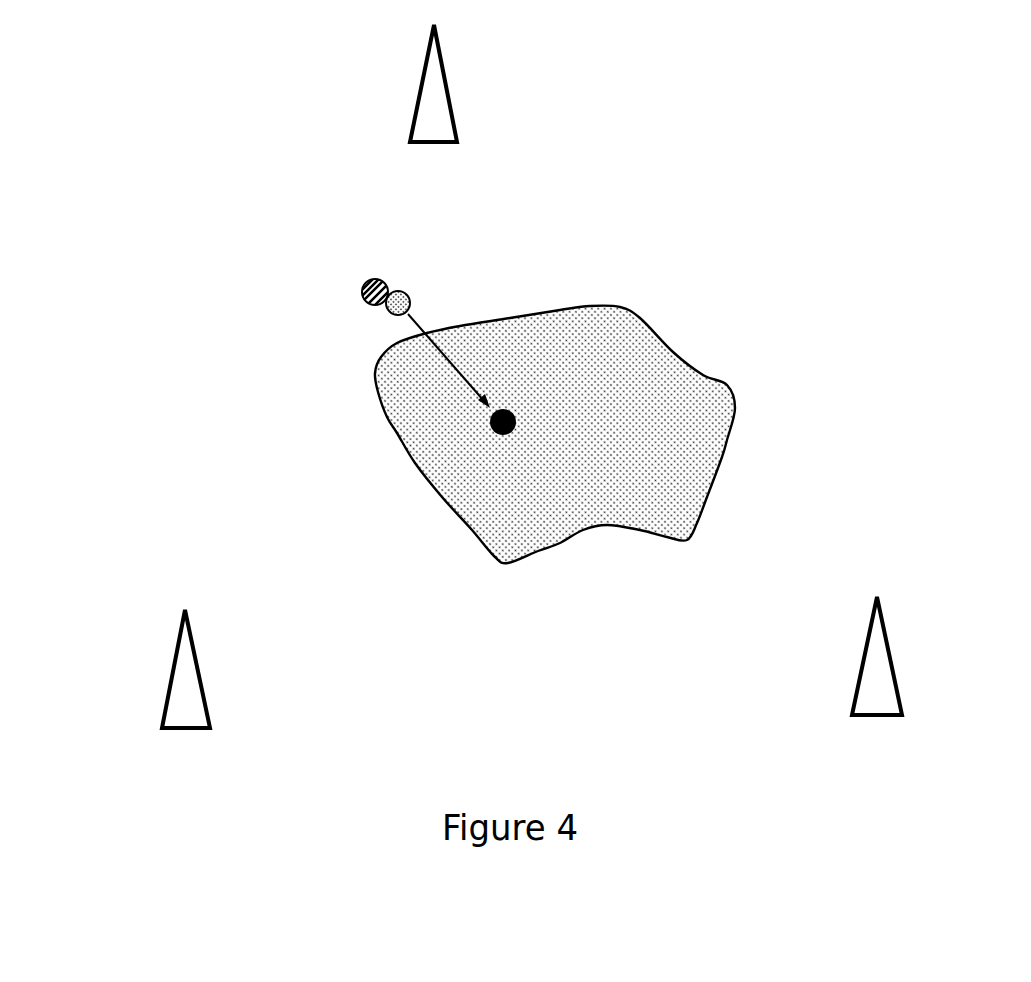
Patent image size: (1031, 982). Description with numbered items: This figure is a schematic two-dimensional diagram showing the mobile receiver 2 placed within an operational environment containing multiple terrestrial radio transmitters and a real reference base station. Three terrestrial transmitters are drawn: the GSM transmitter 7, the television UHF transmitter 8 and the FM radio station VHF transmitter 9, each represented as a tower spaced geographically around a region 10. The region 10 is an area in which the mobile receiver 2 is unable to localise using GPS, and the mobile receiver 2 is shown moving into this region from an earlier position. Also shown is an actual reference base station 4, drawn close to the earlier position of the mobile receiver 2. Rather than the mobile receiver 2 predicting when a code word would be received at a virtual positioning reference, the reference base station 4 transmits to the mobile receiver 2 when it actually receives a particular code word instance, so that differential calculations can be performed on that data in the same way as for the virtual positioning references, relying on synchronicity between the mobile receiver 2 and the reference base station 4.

The mobile receiver 2 is at (472, 425).
The actual reference base station 4 is at (357, 290).
The GSM transmitter 7 is at (447, 84).
The television UHF transmitter 8 is at (887, 645).
The FM radio station VHF transmitter 9 is at (197, 661).
The region 10 is at (637, 451).